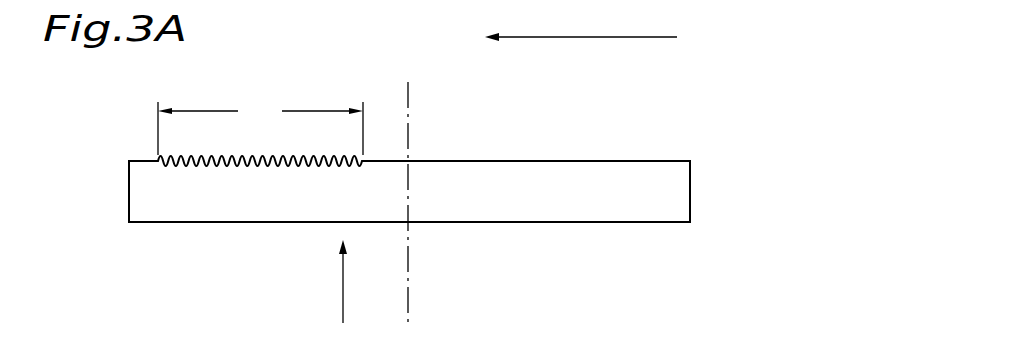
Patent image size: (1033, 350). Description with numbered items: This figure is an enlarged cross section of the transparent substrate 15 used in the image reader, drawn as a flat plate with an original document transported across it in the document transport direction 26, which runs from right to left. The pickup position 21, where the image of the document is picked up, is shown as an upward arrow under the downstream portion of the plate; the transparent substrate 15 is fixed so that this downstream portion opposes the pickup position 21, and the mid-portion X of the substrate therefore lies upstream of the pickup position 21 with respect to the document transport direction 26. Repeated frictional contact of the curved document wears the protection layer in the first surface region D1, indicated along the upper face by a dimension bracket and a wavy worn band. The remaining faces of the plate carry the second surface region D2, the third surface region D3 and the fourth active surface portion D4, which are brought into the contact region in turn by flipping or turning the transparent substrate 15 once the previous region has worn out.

The transparent substrate 15 is at (697, 182).
The document transport direction 26 is at (578, 37).
The pickup position 21 is at (315, 281).
The first surface region D1 is at (260, 127).
The second surface region D2 is at (546, 160).
The third surface region D3 is at (543, 222).
The fourth active surface portion D4 is at (245, 223).
The mid-portion of the transparent substrate X is at (407, 184).